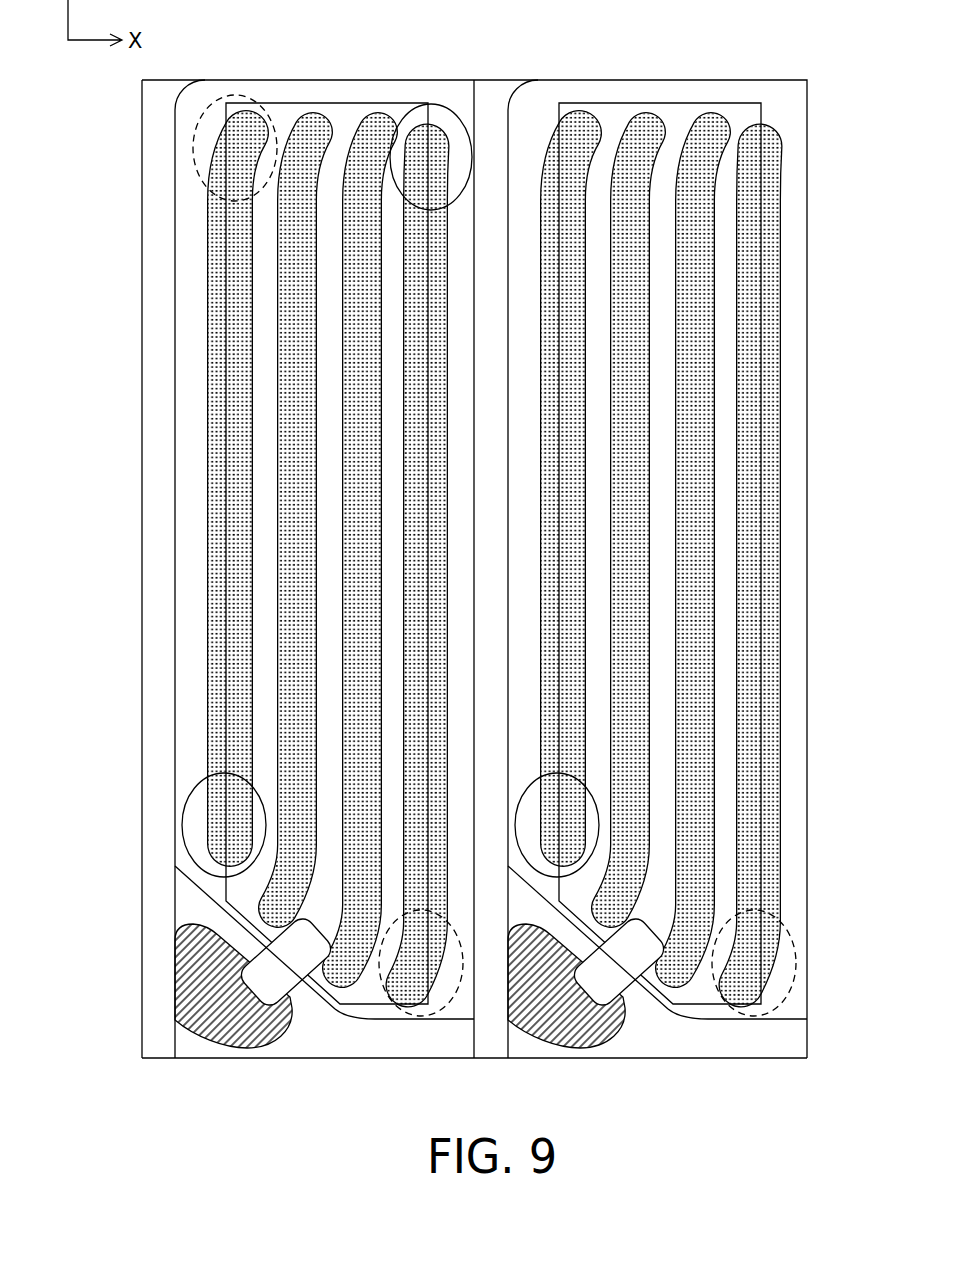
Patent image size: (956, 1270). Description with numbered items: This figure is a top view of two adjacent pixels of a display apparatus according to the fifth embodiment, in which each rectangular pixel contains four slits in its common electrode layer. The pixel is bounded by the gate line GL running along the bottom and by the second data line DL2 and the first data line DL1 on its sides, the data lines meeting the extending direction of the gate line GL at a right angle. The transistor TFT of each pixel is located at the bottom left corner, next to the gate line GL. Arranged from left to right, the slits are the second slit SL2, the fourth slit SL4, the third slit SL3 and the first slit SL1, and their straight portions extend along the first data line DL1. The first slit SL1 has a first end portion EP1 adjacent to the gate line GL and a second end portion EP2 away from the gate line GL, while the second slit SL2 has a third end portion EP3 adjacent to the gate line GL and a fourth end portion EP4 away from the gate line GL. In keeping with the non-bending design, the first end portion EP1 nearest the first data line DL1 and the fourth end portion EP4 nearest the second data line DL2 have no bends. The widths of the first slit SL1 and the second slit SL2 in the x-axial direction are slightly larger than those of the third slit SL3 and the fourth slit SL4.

The first slit SL1 is at (433, 124).
The second slit SL2 is at (230, 105).
The third slit SL3 is at (367, 108).
The fourth slit SL4 is at (305, 110).
The first end portion EP1 is at (182, 823).
The second end portion EP2 is at (193, 150).
The third end portion EP3 is at (424, 1018).
The fourth end portion EP4 is at (452, 105).
The first data line DL1 is at (495, 102).
The second data line DL2 is at (156, 383).
The gate line GL is at (745, 1040).
The transistor TFT is at (232, 1034).